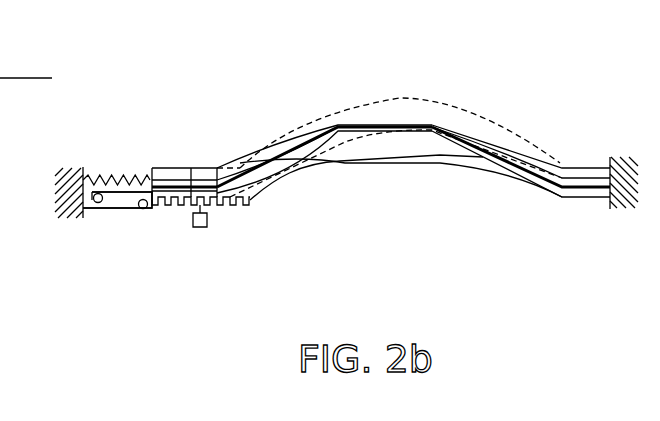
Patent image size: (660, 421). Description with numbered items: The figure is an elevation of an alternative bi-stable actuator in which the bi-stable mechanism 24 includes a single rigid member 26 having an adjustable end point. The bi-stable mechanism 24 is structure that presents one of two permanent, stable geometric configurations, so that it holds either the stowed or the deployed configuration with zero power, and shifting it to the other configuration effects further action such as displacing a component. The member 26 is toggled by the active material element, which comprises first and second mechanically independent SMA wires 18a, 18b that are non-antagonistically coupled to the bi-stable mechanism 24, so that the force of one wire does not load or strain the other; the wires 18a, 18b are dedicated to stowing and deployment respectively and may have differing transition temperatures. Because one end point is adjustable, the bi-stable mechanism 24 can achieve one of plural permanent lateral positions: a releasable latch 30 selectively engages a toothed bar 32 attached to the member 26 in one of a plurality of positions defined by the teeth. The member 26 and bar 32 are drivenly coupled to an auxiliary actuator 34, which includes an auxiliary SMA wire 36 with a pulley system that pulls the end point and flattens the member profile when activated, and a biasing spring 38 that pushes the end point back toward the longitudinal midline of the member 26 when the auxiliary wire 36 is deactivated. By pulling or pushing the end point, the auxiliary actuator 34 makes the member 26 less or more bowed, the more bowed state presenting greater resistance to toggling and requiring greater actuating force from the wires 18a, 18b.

The first SMA wire 18a is at (283, 152).
The second SMA wire 18b is at (545, 160).
The bi-stable mechanism 24 is at (432, 187).
The rigid member 26 is at (418, 98).
The releasable latch 30 is at (200, 227).
The toothed bar 32 is at (252, 200).
The auxiliary actuator 34 is at (117, 237).
The auxiliary SMA wire 36 is at (98, 208).
The biasing spring 38 is at (100, 176).